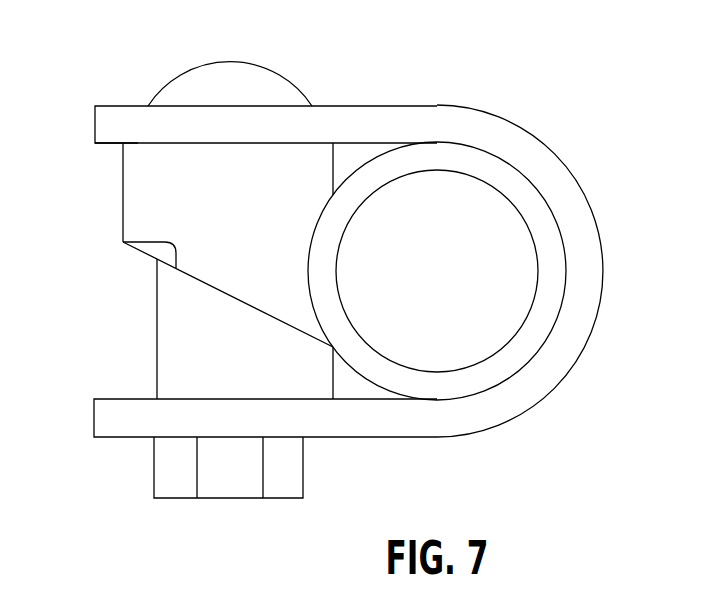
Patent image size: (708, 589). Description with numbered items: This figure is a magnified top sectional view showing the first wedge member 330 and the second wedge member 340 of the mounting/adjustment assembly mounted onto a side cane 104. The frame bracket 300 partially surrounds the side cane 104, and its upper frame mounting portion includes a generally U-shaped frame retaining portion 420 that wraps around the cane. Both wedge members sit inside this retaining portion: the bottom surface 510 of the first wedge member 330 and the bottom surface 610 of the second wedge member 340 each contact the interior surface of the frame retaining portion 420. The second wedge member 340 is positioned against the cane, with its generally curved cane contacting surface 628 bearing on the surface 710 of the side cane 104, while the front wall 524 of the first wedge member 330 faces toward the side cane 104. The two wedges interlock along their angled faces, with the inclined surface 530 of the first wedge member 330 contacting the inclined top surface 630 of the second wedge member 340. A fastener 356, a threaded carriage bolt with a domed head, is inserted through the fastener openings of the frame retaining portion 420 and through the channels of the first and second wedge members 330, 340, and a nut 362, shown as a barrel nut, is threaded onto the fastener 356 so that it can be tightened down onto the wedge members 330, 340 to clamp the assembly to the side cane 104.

The frame bracket 300 is at (553, 152).
The surface of the side cane 710 is at (312, 240).
The side cane 104 is at (517, 265).
The frame retaining portion 420 is at (393, 125).
The fastener 356 is at (243, 78).
The bottom surface 610 is at (136, 143).
The second wedge member 340 is at (155, 200).
The inclined top surface 630 is at (125, 242).
The cane contacting surface 628 is at (307, 273).
The first wedge member 330 is at (180, 335).
The inclined surface 530 is at (229, 300).
The front wall 524 is at (333, 380).
The bottom surface 510 is at (200, 400).
The nut 362 is at (303, 460).